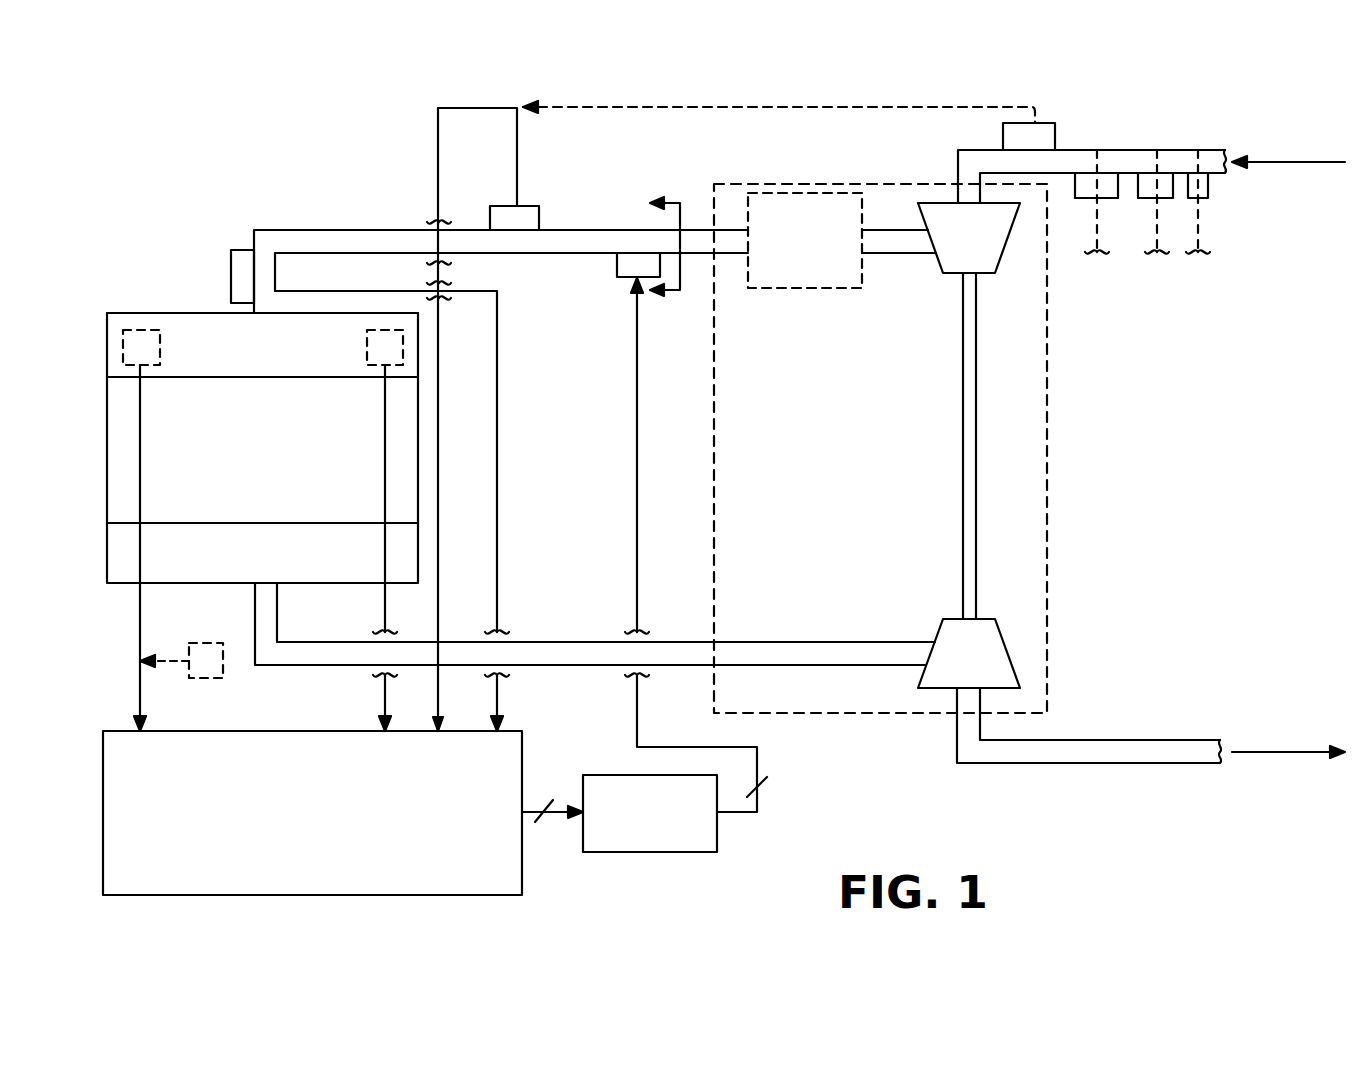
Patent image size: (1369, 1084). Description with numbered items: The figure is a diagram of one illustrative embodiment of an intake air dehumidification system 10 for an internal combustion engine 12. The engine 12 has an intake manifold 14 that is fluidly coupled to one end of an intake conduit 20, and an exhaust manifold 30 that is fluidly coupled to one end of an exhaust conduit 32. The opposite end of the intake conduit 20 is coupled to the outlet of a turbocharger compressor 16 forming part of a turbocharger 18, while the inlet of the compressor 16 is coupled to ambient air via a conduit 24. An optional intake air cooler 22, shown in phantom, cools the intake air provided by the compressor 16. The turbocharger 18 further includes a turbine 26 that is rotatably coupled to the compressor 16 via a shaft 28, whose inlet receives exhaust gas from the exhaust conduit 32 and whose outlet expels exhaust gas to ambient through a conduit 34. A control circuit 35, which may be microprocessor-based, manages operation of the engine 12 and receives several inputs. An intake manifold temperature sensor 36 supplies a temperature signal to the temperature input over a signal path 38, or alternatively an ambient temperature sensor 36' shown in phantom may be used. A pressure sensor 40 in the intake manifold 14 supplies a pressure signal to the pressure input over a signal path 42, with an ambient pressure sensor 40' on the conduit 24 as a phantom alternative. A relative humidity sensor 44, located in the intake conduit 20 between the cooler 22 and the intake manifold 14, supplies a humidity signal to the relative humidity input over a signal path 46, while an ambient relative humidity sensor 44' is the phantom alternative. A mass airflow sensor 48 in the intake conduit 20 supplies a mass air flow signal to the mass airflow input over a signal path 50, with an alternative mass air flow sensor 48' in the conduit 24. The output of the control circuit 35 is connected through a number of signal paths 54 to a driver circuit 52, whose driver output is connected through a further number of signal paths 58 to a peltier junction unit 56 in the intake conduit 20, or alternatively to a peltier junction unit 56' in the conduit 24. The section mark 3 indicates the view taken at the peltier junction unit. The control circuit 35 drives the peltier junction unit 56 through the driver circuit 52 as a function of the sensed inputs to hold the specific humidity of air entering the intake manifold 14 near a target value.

The intake air dehumidification system 10 is at (171, 206).
The internal combustion engine 12 is at (107, 440).
The intake manifold 14 is at (201, 312).
The turbocharger compressor 16 is at (948, 268).
The turbocharger 18 is at (895, 713).
The intake conduit 20 is at (340, 230).
The intake air cooler 22 is at (807, 290).
The conduit 24 is at (958, 170).
The turbine 26 is at (940, 628).
The shaft 28 is at (963, 405).
The exhaust manifold 30 is at (107, 550).
The exhaust conduit 32 is at (755, 640).
The conduit 34 is at (1155, 740).
The control circuit 35 is at (340, 731).
The intake manifold temperature sensor 36 is at (138, 316).
The ambient temperature sensor 36' is at (213, 674).
The signal path 38 is at (138, 638).
The pressure sensor 40 is at (372, 377).
The ambient pressure sensor 40' is at (1208, 154).
The signal path 42 is at (383, 598).
The relative humidity sensor 44 is at (228, 245).
The ambient relative humidity sensor 44' is at (1163, 154).
The signal path 46 is at (497, 505).
The mass airflow sensor 48 is at (545, 202).
The mass air flow sensor 48' is at (1037, 115).
The signal path 50 is at (438, 165).
The driver circuit 52 is at (650, 852).
The signal paths 54 is at (553, 820).
The peltier junction unit 56 is at (606, 282).
The peltier junction unit 56' is at (1101, 154).
The signal paths 58 is at (637, 475).
The section line for FIG. 3 is at (674, 248).